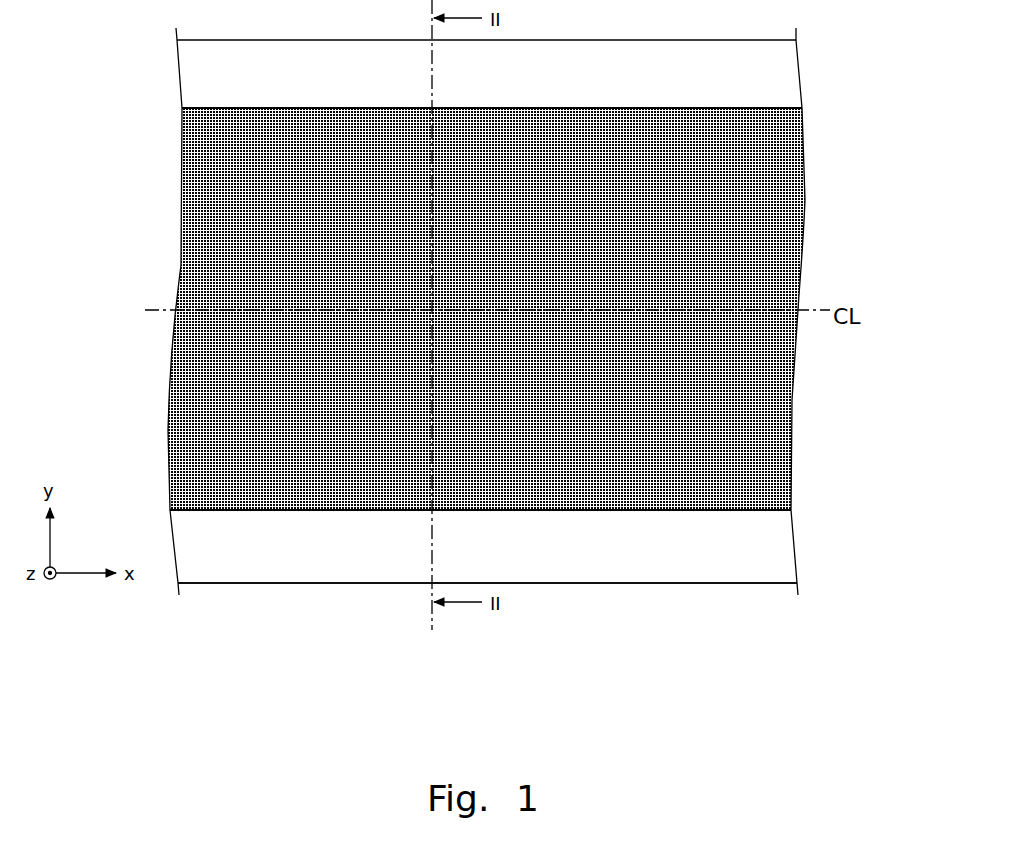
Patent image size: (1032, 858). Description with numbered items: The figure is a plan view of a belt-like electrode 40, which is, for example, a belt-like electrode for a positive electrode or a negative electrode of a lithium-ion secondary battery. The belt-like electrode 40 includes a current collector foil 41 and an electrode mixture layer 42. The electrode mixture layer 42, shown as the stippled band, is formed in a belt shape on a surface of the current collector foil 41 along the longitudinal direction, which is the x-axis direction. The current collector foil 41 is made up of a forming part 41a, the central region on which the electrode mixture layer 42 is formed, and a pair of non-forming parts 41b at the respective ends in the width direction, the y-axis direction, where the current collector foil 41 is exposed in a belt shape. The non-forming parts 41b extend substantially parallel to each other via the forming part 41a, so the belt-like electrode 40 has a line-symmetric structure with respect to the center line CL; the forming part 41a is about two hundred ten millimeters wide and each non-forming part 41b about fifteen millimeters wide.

The belt-like electrode 40 is at (838, 76).
The electrode mixture layer 42 is at (805, 203).
The current collector foil 41 is at (547, 509).
The forming part 41a is at (795, 454).
The non-forming part 41b is at (522, 546).